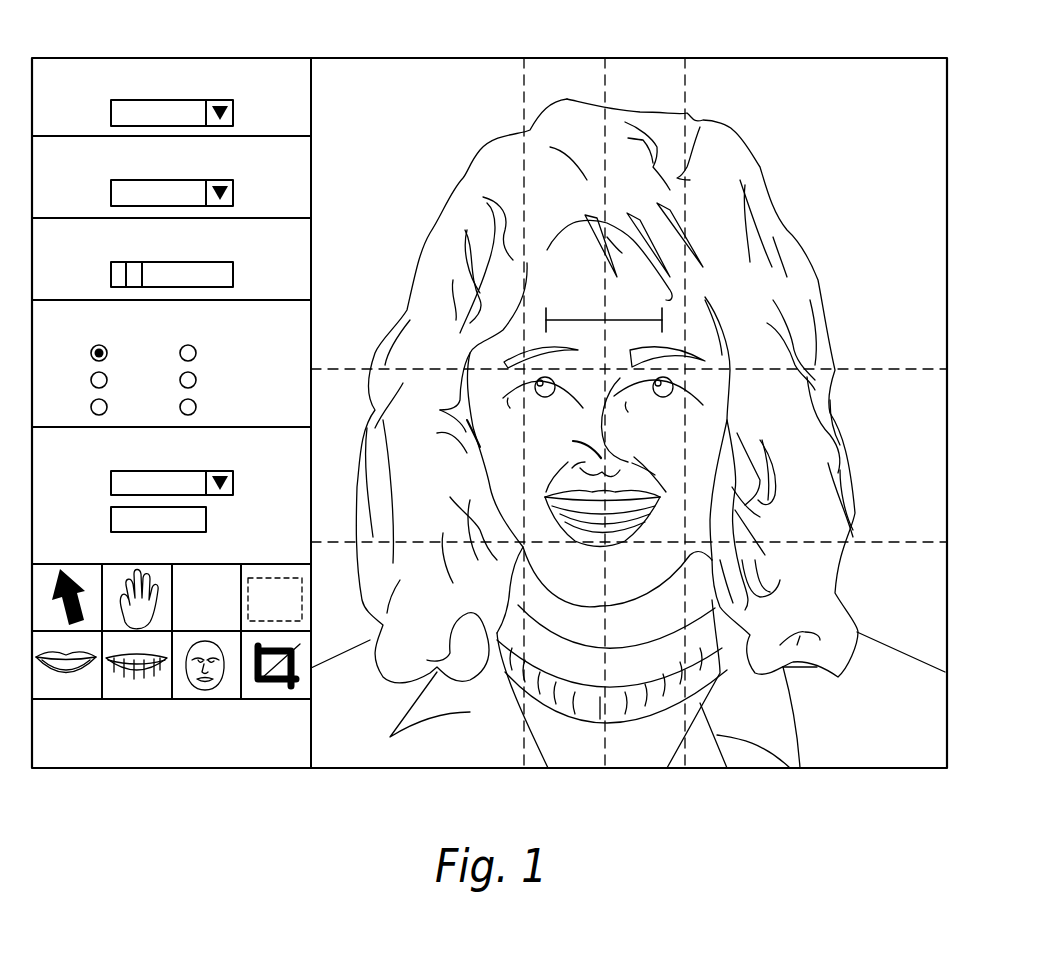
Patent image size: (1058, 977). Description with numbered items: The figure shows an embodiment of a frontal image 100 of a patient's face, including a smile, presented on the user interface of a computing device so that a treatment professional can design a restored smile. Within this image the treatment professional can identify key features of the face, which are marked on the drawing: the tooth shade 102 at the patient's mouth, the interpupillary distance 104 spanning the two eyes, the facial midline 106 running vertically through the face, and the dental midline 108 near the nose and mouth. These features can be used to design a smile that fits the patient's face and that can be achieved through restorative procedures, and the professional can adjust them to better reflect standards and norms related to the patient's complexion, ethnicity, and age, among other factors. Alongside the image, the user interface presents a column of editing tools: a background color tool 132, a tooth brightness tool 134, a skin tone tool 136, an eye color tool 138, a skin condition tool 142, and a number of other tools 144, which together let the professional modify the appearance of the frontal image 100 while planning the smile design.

The frontal image 100 is at (840, 172).
The tooth shade 102 is at (651, 505).
The interpupillary distance 104 is at (604, 320).
The facial midline 106 is at (604, 87).
The dental midline 108 is at (575, 451).
The background color tool 132 is at (314, 99).
The tooth brightness tool 134 is at (314, 174).
The skin tone tool 136 is at (314, 259).
The eye color tool 138 is at (314, 346).
The skin condition tool 142 is at (314, 472).
The other tools 144 is at (314, 622).